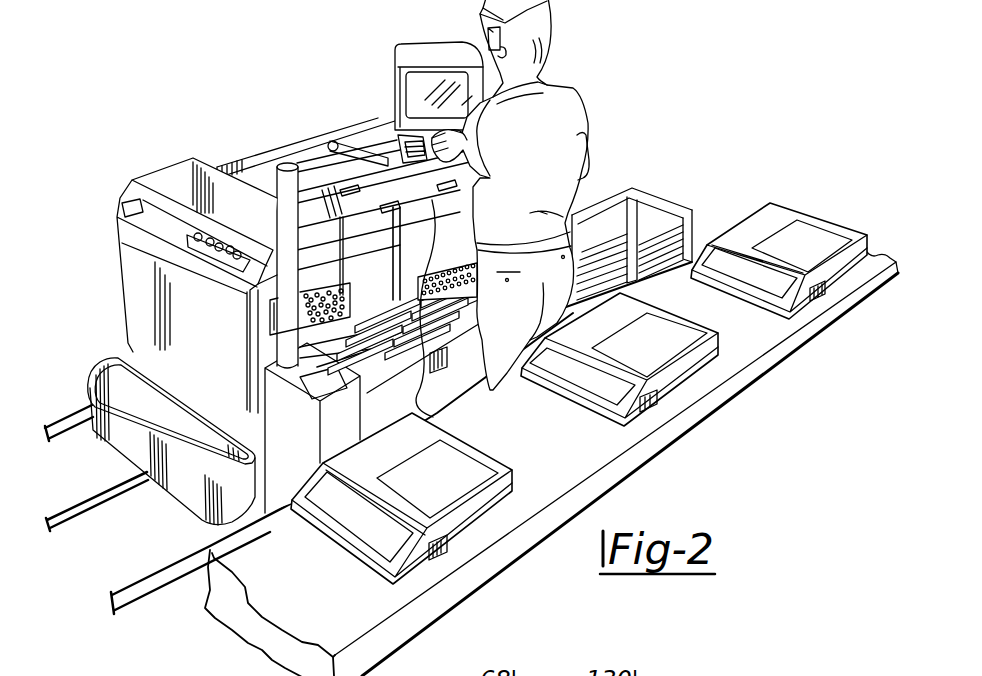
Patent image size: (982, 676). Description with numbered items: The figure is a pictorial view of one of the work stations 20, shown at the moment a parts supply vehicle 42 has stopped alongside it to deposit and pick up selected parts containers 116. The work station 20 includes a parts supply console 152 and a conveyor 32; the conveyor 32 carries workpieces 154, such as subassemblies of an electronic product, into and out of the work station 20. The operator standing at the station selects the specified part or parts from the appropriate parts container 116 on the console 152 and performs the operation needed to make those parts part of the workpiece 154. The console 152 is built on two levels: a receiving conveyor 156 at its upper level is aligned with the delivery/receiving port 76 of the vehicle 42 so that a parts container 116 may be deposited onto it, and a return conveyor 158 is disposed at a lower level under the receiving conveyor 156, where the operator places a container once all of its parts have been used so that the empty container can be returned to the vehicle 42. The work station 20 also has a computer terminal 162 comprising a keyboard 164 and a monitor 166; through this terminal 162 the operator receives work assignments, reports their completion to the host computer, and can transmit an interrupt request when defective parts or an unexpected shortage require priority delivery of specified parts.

The work station 20 is at (633, 98).
The conveyor 32 is at (588, 456).
The vehicle 42 is at (110, 287).
The delivery/receiving port 76 is at (273, 323).
The parts container 116 is at (446, 182).
The parts supply console 152 is at (645, 175).
The workpiece 154 is at (452, 527).
The receiving conveyor 156 is at (433, 417).
The return conveyor 158 is at (660, 252).
The computer terminal 162 is at (368, 98).
The keyboard 164 is at (393, 138).
The monitor 166 is at (402, 80).